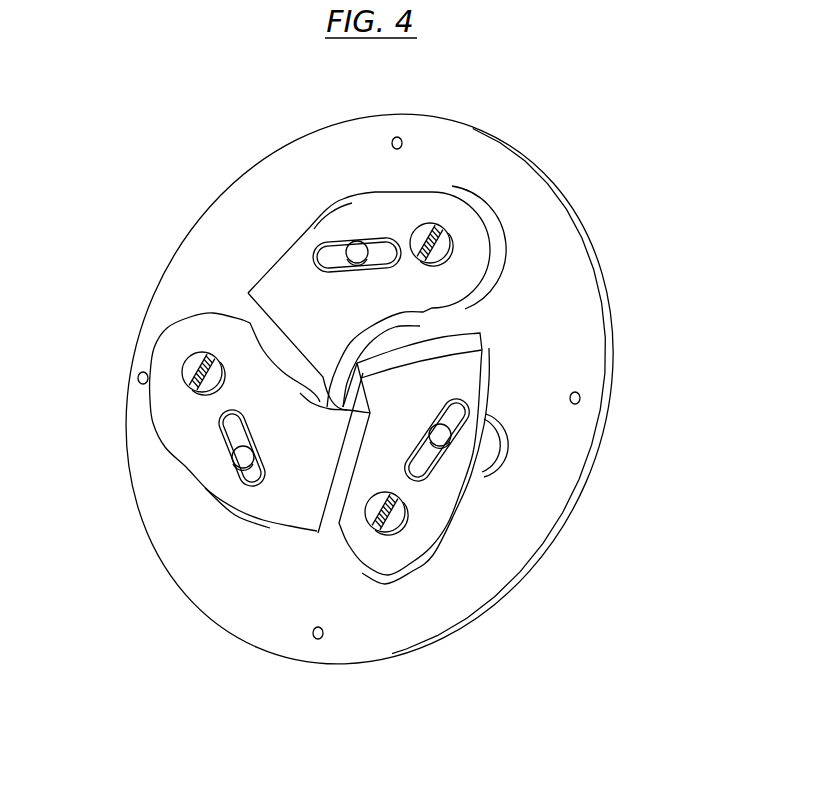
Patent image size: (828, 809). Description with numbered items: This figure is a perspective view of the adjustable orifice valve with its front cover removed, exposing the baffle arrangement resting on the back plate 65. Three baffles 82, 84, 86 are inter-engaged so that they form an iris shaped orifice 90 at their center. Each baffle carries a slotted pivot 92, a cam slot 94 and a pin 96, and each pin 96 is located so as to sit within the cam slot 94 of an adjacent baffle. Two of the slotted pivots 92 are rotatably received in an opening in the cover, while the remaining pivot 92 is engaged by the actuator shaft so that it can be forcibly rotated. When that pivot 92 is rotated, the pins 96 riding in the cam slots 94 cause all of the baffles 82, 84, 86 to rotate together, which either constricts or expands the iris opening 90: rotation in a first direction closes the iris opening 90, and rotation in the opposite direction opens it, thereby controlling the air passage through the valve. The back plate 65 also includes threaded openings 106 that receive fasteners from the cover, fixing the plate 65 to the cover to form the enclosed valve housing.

The back plate 65 is at (540, 203).
The baffle 82 is at (285, 506).
The baffle 84 is at (447, 374).
The baffle 86 is at (272, 283).
The iris shaped orifice 90 is at (349, 399).
The slotted pivot 92 is at (185, 364).
The cam slot 94 is at (240, 462).
The pin 96 is at (238, 440).
The threaded openings 106 is at (372, 127).